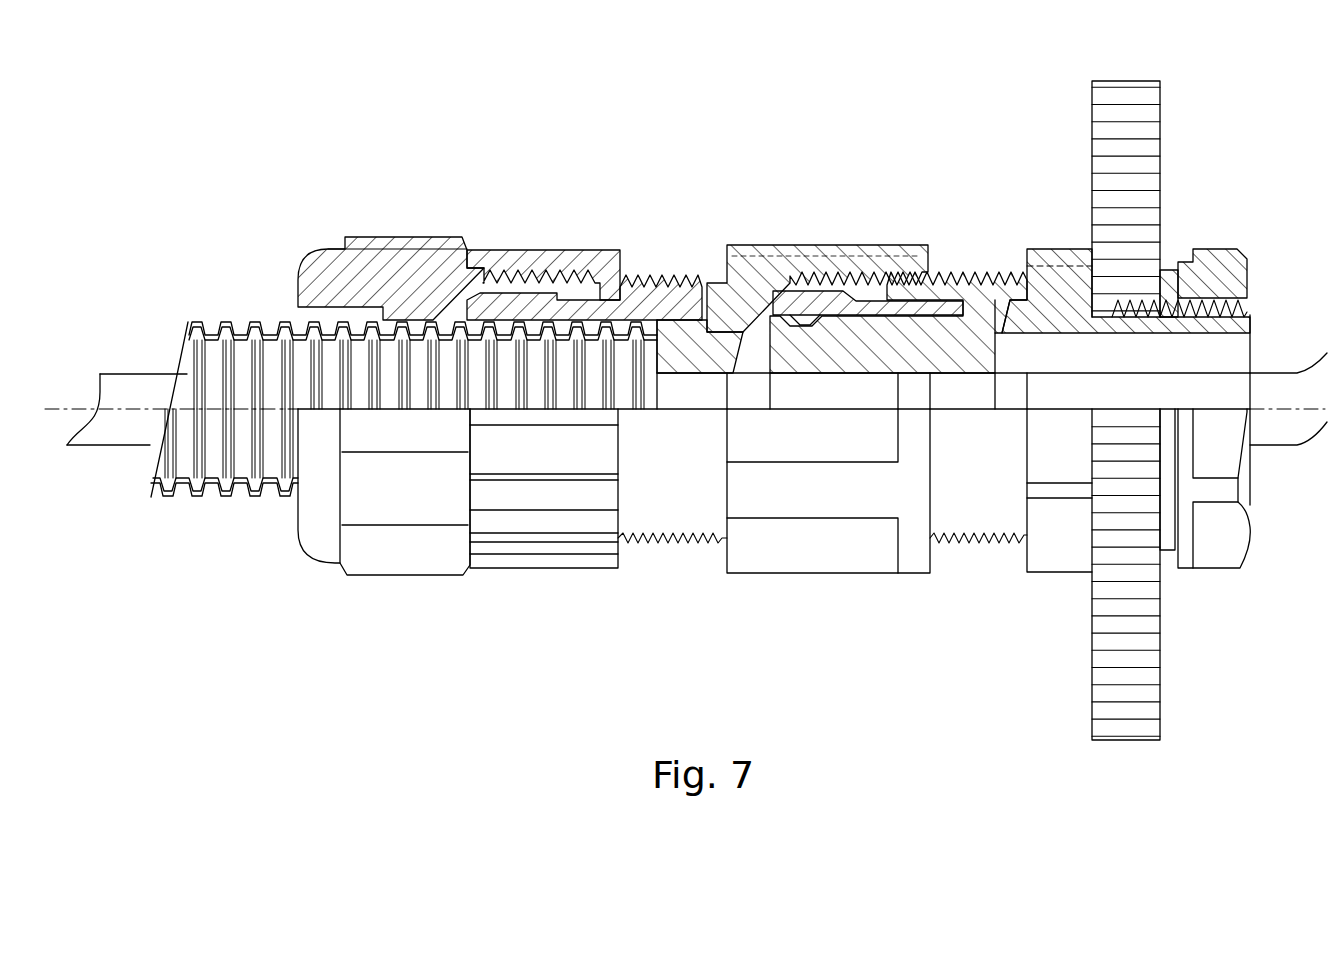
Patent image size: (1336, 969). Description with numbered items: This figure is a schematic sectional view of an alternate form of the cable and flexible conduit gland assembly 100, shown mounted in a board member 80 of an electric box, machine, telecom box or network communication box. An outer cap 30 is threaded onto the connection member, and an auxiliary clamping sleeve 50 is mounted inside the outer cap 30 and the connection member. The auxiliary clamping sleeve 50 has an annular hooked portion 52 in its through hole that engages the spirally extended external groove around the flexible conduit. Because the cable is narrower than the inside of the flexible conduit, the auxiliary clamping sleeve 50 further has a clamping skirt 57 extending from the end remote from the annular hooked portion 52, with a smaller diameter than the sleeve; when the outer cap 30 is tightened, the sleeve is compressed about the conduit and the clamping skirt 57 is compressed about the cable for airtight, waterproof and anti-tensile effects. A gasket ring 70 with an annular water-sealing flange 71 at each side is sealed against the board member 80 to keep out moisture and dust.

The cable and flexible conduit gland assembly 100 is at (686, 380).
The outer cap 30 is at (368, 588).
The auxiliary clamping sleeve 50 is at (572, 296).
The annular hooked portion 52 is at (496, 330).
The clamping skirt 57 is at (720, 350).
The gasket ring 70 is at (1163, 277).
The annular water-sealing flange 71 is at (1177, 282).
The board member 80 is at (1102, 177).